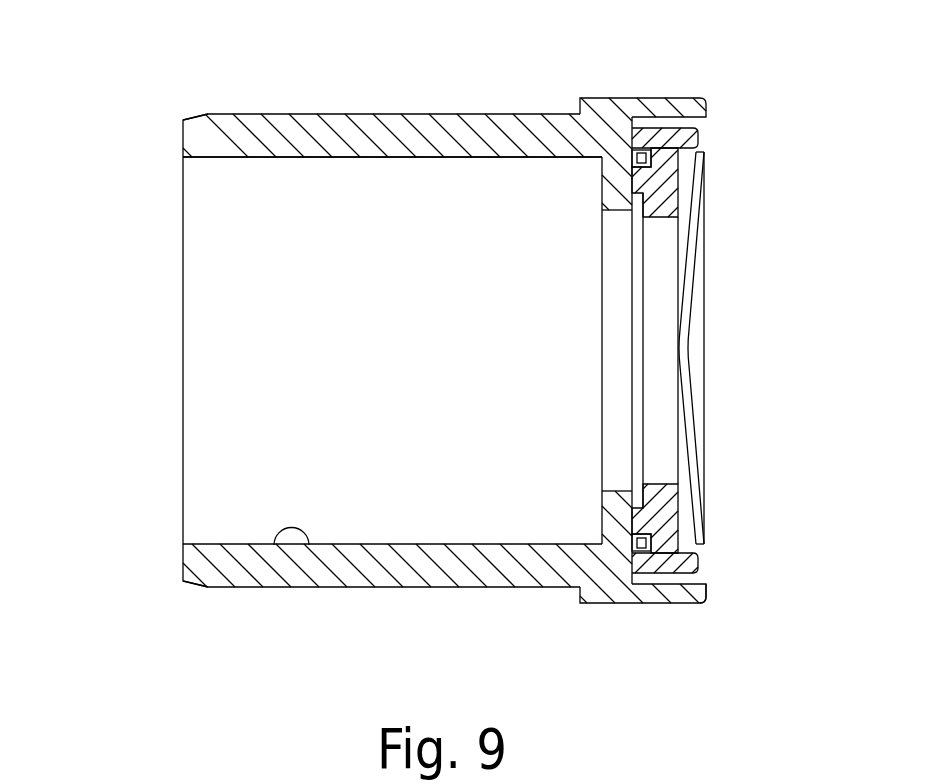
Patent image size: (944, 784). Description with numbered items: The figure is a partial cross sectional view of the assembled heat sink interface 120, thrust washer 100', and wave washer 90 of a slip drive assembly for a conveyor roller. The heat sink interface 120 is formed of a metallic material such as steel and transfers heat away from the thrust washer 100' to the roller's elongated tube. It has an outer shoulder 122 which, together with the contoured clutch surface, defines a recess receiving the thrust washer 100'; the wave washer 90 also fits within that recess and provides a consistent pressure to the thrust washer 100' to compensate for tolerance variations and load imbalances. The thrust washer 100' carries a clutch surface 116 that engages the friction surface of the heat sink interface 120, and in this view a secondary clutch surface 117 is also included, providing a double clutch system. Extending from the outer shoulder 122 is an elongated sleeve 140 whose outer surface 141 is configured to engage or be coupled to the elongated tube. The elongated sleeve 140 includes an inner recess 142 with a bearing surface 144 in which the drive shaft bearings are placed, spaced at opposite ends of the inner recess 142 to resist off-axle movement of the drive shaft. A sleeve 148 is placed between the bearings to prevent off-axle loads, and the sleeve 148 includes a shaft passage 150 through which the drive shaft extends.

The wave washer 90 is at (712, 432).
The thrust washer 100' is at (687, 408).
The clutch surface 116 is at (632, 180).
The secondary clutch surface 117 is at (633, 136).
The heat sink interface 120 is at (520, 587).
The outer shoulder 122 is at (700, 602).
The elongated sleeve 140 is at (427, 128).
The outer surface 141 is at (208, 587).
The inner recess 142 is at (343, 193).
The bearing surface 144 is at (309, 545).
The sleeve 148 is at (399, 570).
The shaft passage 150 is at (263, 322).